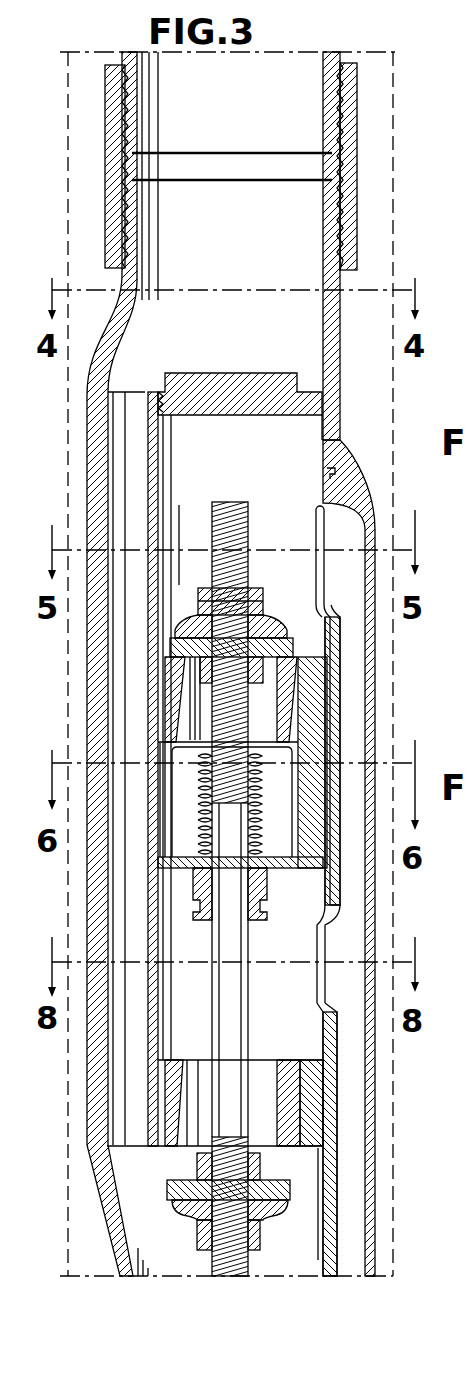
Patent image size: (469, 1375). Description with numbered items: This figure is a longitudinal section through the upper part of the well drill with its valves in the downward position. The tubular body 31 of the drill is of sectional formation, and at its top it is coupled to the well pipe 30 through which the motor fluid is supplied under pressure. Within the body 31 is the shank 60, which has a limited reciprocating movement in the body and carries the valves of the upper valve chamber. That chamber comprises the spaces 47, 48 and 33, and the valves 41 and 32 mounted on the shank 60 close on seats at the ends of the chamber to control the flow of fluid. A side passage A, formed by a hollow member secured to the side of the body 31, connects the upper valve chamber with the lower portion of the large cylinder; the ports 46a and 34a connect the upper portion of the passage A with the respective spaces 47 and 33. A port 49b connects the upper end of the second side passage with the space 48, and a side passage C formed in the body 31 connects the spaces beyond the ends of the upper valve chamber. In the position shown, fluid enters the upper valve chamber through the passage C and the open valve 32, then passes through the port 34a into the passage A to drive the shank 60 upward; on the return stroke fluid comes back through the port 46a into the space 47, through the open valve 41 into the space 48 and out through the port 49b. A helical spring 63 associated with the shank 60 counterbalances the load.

The well pipe 30 is at (340, 57).
The body 31 is at (336, 316).
The side passage C is at (133, 425).
The port 49b is at (185, 810).
The space 47 is at (336, 437).
The side passage A is at (357, 655).
The port 46a is at (326, 533).
The shank 60 is at (248, 1265).
The valve 41 is at (273, 633).
The space 48 is at (297, 757).
The helical spring 63 is at (262, 835).
The port 34a is at (326, 915).
The space 33 is at (313, 1035).
The valve 32 is at (184, 1215).